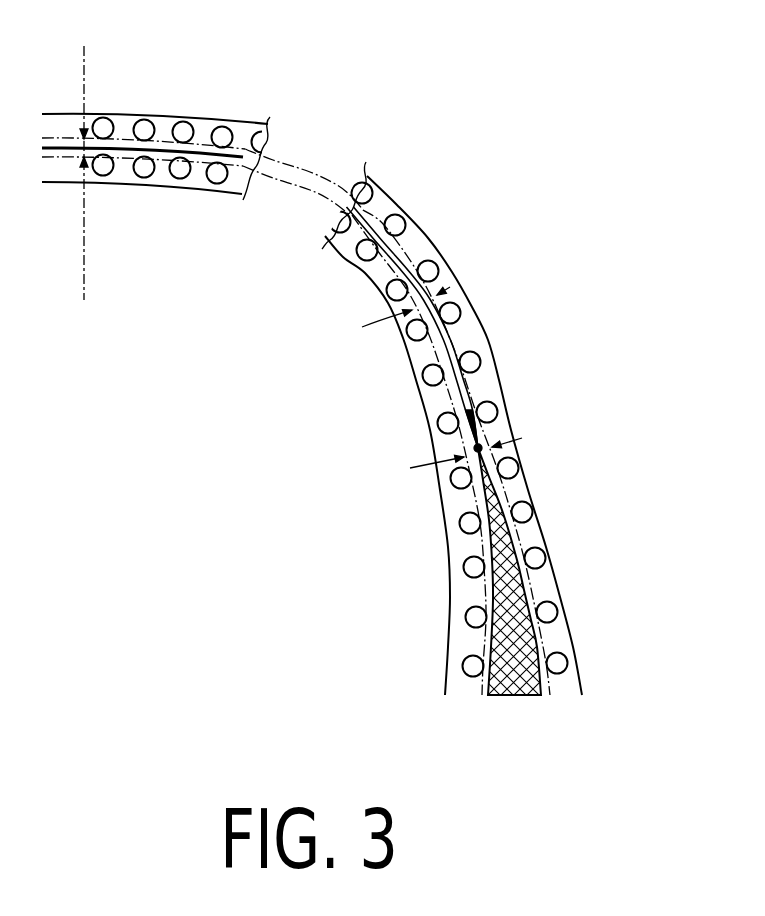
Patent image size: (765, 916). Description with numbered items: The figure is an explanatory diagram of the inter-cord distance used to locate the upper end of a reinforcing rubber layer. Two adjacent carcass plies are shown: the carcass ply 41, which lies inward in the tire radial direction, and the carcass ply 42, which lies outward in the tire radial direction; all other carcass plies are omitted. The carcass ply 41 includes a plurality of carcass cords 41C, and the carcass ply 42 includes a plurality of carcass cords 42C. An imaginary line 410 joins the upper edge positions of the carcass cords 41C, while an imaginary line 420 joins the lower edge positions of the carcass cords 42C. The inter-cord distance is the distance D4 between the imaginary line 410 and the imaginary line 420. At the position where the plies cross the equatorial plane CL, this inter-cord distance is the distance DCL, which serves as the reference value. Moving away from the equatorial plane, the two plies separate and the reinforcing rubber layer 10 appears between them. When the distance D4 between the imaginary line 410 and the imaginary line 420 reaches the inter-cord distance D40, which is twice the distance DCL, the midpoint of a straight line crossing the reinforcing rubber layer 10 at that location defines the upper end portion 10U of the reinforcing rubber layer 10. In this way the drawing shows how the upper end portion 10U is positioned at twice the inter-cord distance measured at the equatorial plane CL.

The equatorial plane CL is at (84, 161).
The inter-cord distance at the equatorial plane DCL is at (84, 151).
The carcass ply 41 is at (380, 270).
The carcass cords 41C is at (353, 256).
The imaginary line 410 is at (440, 352).
The carcass ply 42 is at (417, 242).
The carcass cords 42C is at (397, 223).
The imaginary line 420 is at (455, 342).
The inter-cord distance D4 is at (388, 312).
The reinforcing rubber layer 10 is at (515, 532).
The upper end portion of the reinforcing rubber layer 10U is at (477, 448).
The inter-cord distance twice the distance DCL D40 is at (497, 443).